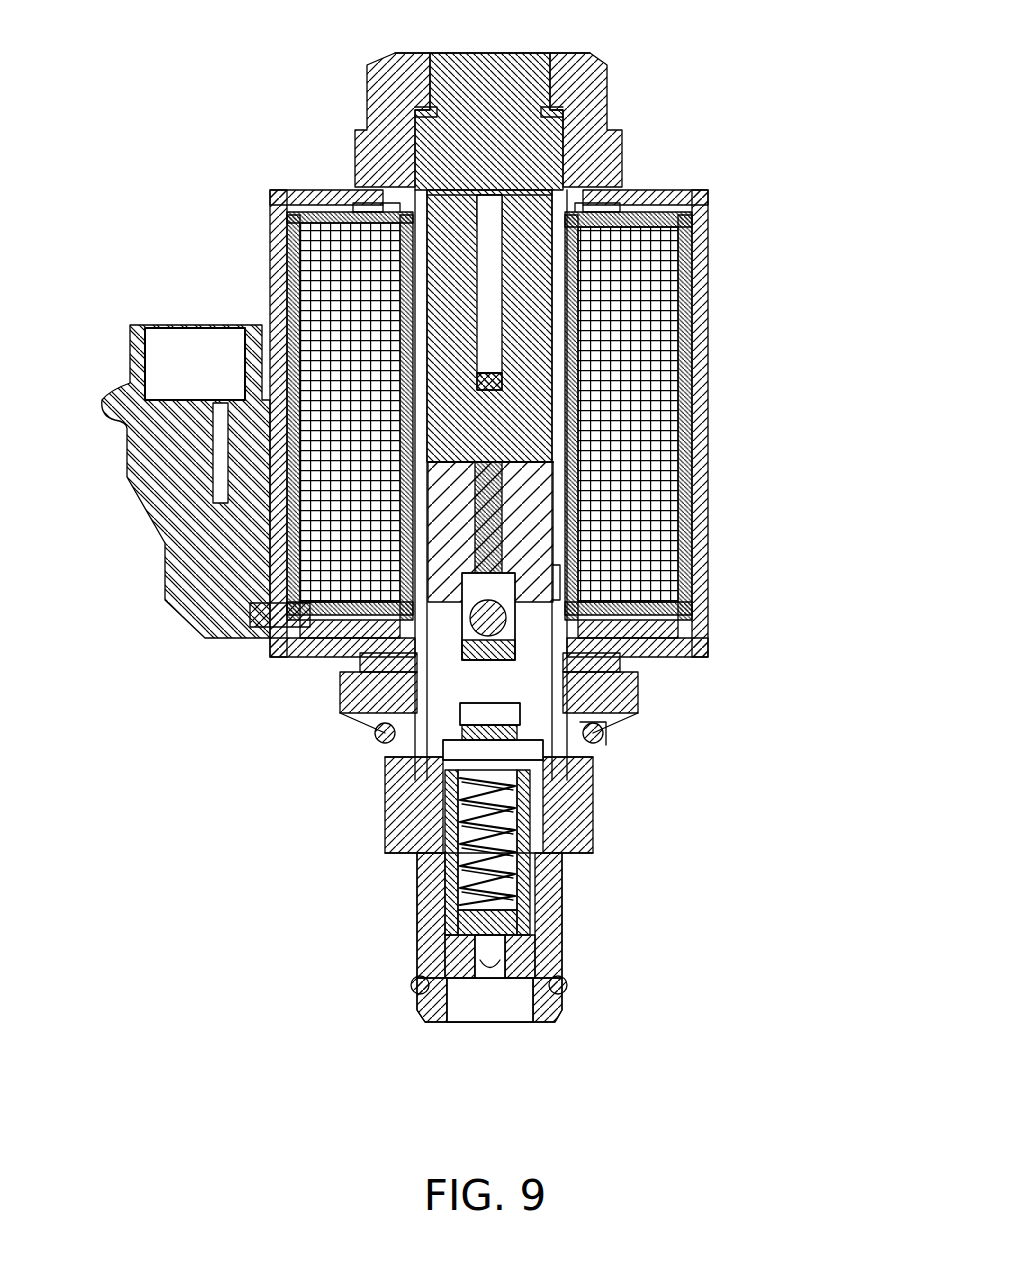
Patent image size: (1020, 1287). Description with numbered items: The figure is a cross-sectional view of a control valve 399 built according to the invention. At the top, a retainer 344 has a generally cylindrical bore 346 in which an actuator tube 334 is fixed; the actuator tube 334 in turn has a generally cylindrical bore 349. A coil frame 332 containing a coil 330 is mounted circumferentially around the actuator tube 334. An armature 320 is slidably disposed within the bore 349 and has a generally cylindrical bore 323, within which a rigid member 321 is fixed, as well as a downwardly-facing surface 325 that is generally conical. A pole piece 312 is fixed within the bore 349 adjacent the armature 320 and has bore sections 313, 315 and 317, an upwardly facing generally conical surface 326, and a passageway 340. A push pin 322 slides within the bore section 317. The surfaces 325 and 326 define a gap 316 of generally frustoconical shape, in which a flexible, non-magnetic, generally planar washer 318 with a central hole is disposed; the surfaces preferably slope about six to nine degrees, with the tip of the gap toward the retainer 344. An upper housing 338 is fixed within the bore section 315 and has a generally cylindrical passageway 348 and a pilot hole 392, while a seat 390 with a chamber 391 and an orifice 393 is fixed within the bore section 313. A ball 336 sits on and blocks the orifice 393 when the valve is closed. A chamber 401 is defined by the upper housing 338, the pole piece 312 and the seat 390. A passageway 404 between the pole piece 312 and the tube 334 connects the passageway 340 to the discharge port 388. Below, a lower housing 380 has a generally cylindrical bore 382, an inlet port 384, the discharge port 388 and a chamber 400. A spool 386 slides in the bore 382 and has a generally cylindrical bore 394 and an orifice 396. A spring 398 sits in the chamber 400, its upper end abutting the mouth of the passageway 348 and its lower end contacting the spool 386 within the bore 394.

The pole piece 312 is at (420, 760).
The bore section 313 is at (430, 780).
The bore section 315 is at (445, 830).
The gap 316 is at (440, 455).
The bore section 317 is at (440, 540).
The washer 318 is at (445, 490).
The armature 320 is at (690, 300).
The rigid member 321 is at (470, 390).
The push pin 322 is at (600, 545).
The bore 323 is at (490, 232).
The downwardly-facing surface 325 is at (545, 470).
The upwardly facing surface 326 is at (520, 500).
The coil 330 is at (650, 200).
The coil frame 332 is at (650, 245).
The actuator tube 334 is at (625, 690).
The ball 336 is at (600, 590).
The upper housing 338 is at (440, 840).
The passageway 340 is at (600, 620).
The retainer 344 is at (598, 108).
The bore 346 is at (558, 56).
The passageway 348 is at (430, 860).
The bore 349 is at (340, 685).
The lower housing 380 is at (425, 960).
The bore 382 is at (460, 1010).
The inlet port 384 is at (487, 1027).
The spool 386 is at (455, 1000).
The discharge port 388 is at (575, 985).
The seat 390 is at (603, 663).
The chamber 391 is at (628, 713).
The pilot hole 392 is at (540, 850).
The orifice 393 is at (380, 735).
The bore 394 is at (450, 920).
The orifice 396 is at (560, 925).
The spring 398 is at (530, 870).
The control valve 399 is at (140, 628).
The chamber 400 is at (545, 890).
The chamber 401 is at (600, 744).
The passageway 404 is at (606, 738).